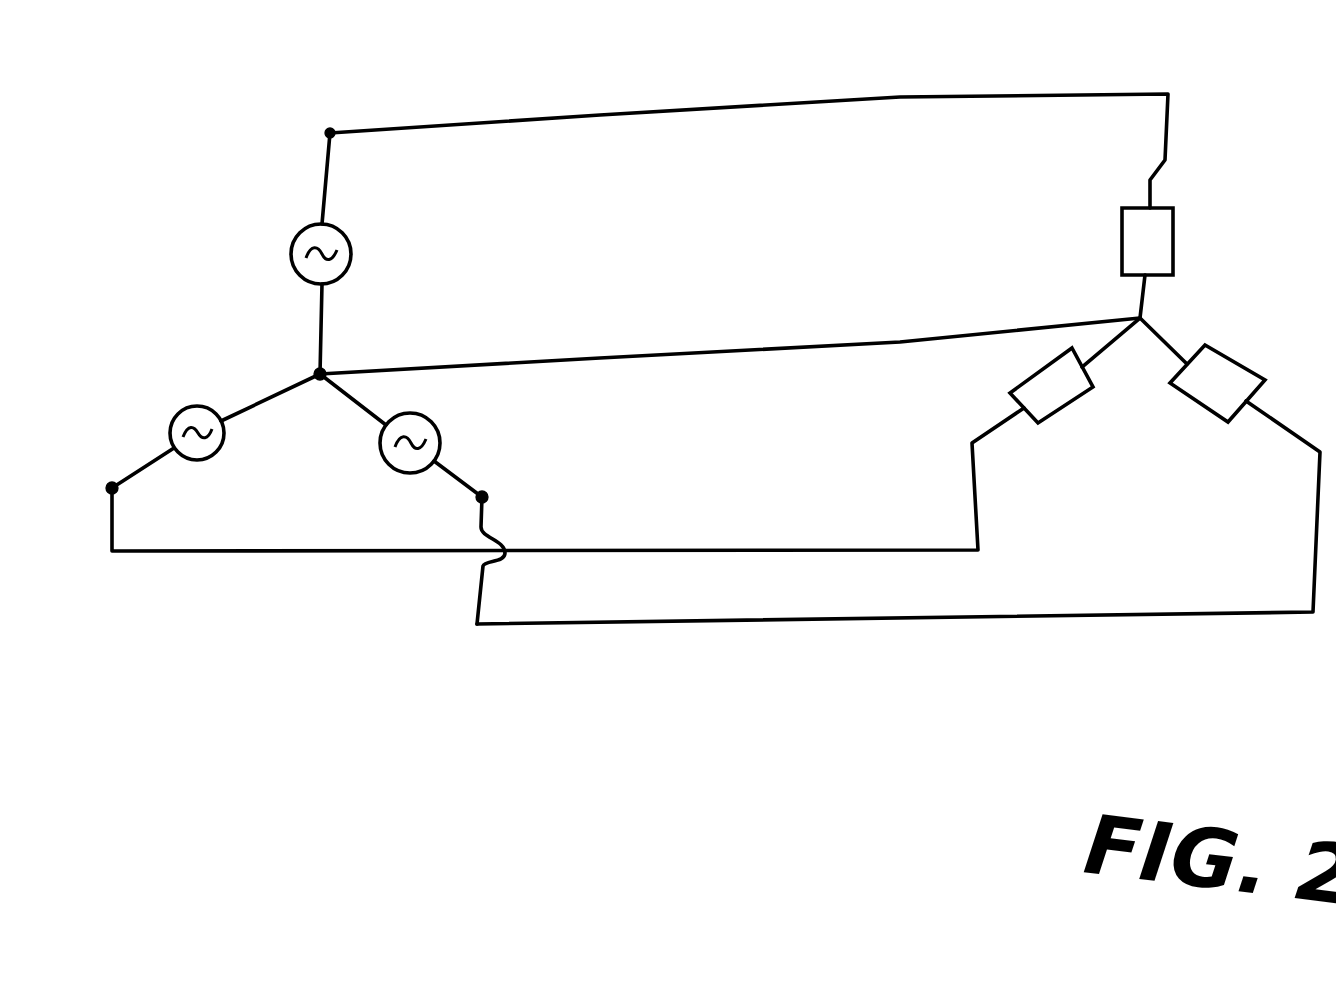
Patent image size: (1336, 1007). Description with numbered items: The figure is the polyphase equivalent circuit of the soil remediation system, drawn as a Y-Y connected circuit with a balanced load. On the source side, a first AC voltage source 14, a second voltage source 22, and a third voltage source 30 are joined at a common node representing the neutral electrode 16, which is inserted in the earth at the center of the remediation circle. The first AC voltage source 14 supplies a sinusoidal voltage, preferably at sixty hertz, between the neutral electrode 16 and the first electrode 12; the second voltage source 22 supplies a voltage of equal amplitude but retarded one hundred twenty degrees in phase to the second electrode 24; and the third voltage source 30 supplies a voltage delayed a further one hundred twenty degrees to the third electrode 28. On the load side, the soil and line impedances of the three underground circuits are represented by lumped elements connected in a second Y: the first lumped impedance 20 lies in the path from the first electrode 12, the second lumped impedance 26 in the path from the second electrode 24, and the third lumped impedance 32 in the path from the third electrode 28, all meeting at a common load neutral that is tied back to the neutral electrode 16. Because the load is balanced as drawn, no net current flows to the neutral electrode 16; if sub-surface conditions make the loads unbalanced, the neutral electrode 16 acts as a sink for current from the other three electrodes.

The first electrode 12 is at (338, 126).
The first AC voltage source 14 is at (357, 258).
The neutral electrode 16 is at (331, 362).
The first lumped impedance 20 is at (1178, 248).
The second voltage source 22 is at (457, 434).
The second electrode 24 is at (500, 490).
The second lumped impedance 26 is at (1243, 360).
The third electrode 28 is at (108, 473).
The third voltage source 30 is at (214, 462).
The third lumped impedance 32 is at (1052, 424).